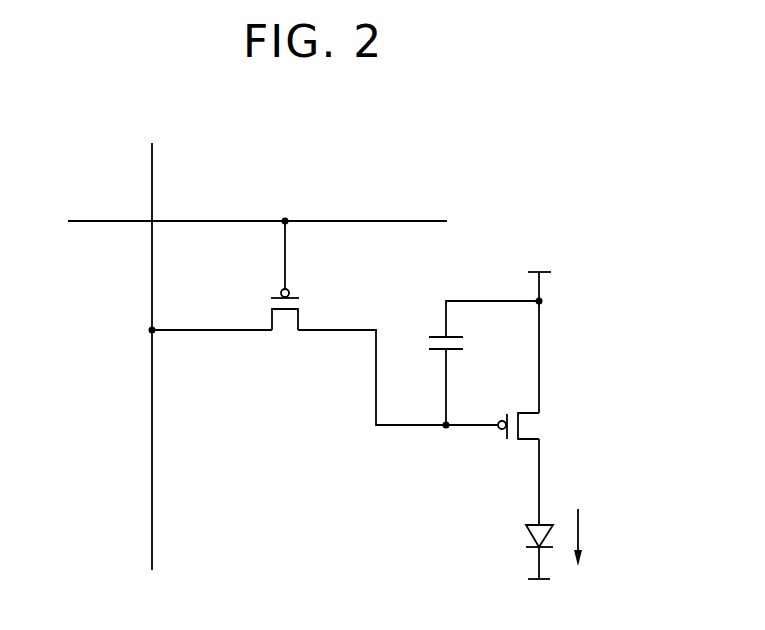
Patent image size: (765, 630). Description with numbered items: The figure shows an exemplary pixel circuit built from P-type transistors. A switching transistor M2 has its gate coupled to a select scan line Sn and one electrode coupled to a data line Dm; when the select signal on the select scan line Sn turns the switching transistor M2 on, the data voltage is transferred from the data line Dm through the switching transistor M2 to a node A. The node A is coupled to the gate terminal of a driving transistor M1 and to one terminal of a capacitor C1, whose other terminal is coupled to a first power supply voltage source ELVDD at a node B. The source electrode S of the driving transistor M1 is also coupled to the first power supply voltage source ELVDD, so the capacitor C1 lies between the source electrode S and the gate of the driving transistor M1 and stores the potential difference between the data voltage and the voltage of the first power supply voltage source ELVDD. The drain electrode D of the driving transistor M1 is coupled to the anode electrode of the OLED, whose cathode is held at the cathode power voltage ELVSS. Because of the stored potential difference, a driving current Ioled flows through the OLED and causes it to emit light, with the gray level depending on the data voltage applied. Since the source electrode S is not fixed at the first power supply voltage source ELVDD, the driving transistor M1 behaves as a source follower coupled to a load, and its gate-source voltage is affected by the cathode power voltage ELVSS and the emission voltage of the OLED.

The data line Dm is at (153, 341).
The select scan line Sn is at (240, 222).
The switching transistor M2 is at (285, 289).
The driving transistor M1 is at (535, 469).
The capacitor C1 is at (484, 363).
The node A is at (446, 442).
The node B (source of driving transistor) B is at (551, 303).
The source electrode S is at (554, 375).
The drain electrode D is at (555, 480).
The first power supply voltage source ELVDD is at (539, 328).
The cathode power voltage ELVSS is at (538, 596).
The element OLED is at (504, 552).
The driving current Ioled is at (606, 537).